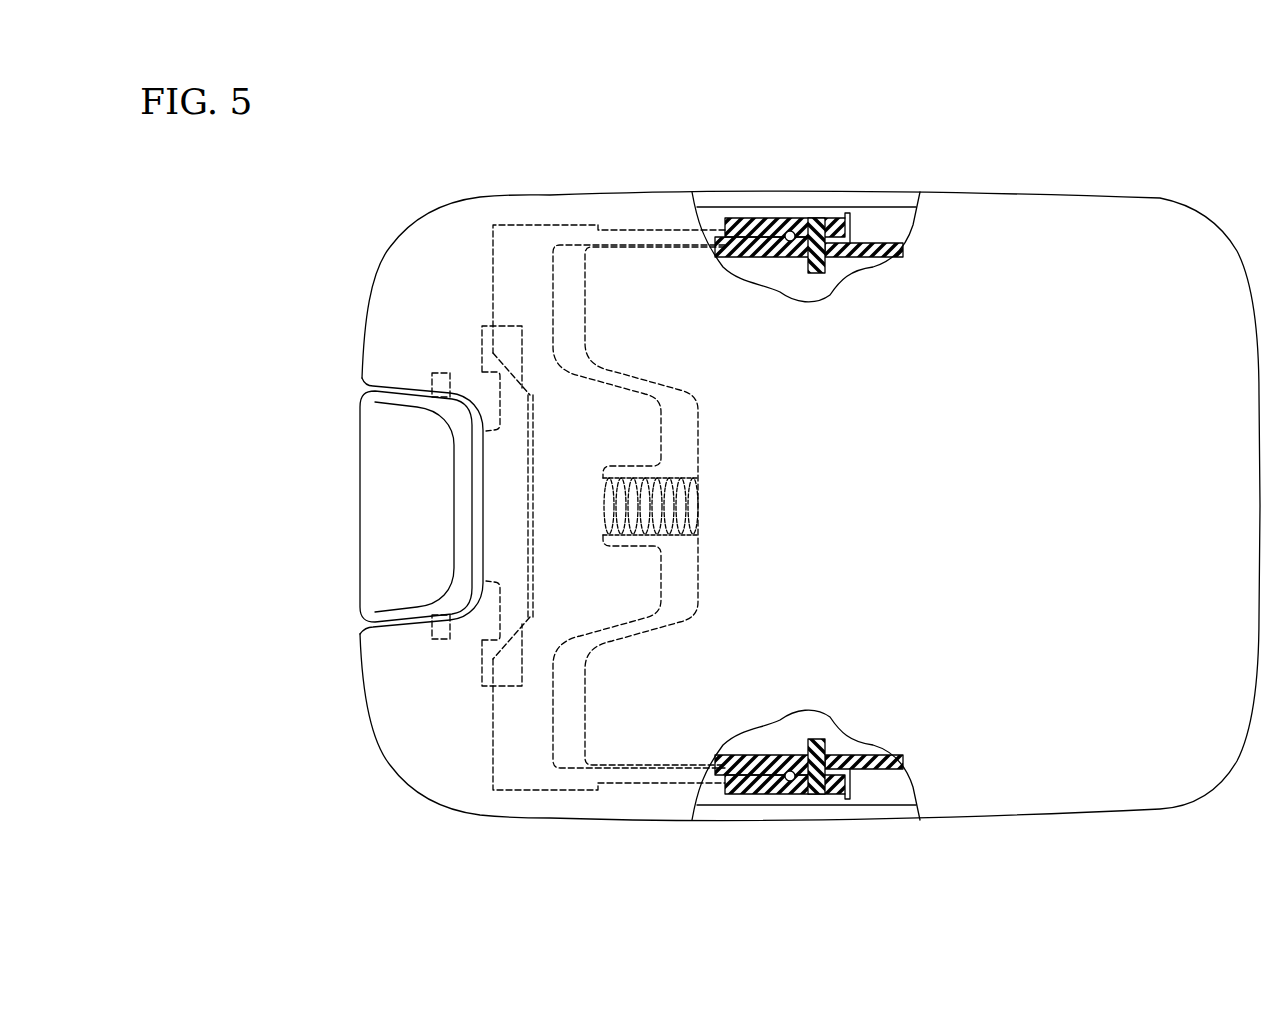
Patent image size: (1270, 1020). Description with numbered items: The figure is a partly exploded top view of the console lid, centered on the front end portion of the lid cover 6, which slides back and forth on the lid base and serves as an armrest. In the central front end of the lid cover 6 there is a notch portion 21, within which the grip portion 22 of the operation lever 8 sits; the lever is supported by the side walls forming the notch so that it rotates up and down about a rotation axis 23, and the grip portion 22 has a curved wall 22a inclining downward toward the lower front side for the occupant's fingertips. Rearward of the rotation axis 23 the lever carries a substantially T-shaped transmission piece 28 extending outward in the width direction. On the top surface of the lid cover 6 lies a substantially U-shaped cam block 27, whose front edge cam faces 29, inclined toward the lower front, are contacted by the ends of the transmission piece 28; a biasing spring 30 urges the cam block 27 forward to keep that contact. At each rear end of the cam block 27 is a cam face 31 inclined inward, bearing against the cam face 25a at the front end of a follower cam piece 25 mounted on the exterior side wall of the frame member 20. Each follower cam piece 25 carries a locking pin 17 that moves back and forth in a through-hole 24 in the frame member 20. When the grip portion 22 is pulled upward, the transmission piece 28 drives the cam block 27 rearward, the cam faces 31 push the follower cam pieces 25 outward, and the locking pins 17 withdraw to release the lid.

The lid cover 6 is at (1168, 190).
The operation lever 8 is at (370, 503).
The locking pin 17 is at (893, 245).
The frame member 20 is at (887, 238).
The notch portion 21 is at (368, 380).
The grip portion 22 is at (416, 506).
The curved wall 22a is at (372, 563).
The rotation axis 23 is at (440, 373).
The through-hole 24 is at (822, 243).
The follower cam piece 25 is at (845, 218).
The cam face 25a is at (790, 231).
The cam block 27 is at (485, 255).
The transmission piece 28 is at (493, 655).
The cam face 29 is at (498, 338).
The biasing spring 30 is at (677, 537).
The cam face 31 is at (775, 218).